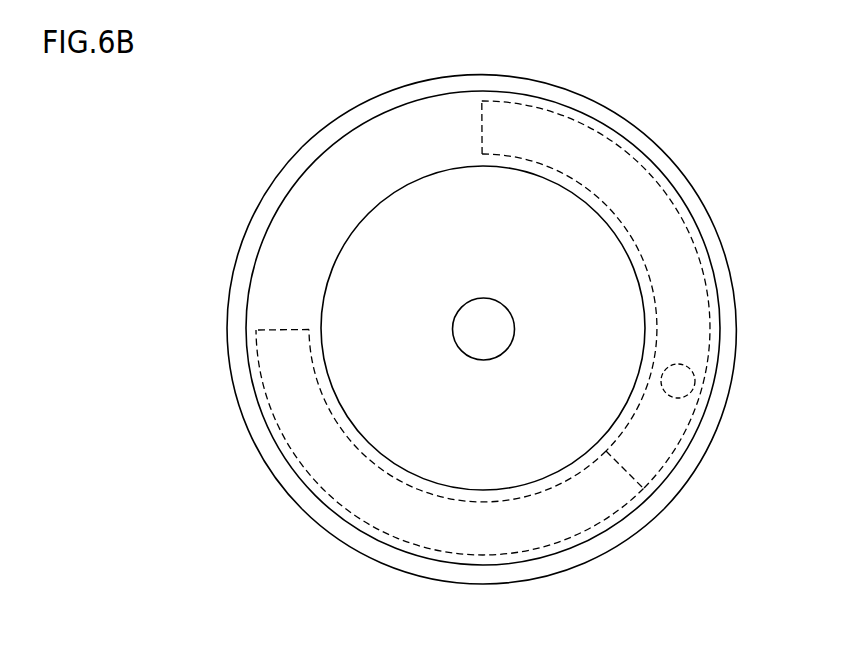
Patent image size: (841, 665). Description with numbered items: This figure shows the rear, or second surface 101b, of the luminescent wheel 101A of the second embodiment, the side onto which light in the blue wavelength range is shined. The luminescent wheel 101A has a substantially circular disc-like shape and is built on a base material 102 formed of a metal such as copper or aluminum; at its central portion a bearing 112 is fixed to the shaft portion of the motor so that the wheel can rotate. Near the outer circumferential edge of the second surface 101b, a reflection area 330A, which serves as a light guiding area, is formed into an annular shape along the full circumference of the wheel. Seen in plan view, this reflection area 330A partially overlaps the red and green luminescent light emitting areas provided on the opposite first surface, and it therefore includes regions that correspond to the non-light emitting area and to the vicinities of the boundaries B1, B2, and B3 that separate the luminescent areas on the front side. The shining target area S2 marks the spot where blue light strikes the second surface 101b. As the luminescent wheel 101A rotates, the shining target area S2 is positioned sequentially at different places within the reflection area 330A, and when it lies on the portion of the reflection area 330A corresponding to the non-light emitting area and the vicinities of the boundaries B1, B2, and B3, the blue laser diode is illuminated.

The luminescent wheel 101A is at (676, 137).
The second surface 101b is at (340, 528).
The base material 102 is at (696, 208).
The reflection area 330A is at (259, 245).
The bearing 112 is at (494, 297).
The shining target area S2 is at (695, 386).
The boundary B1 is at (633, 478).
The boundary B2 is at (482, 103).
The boundary B3 is at (256, 330).